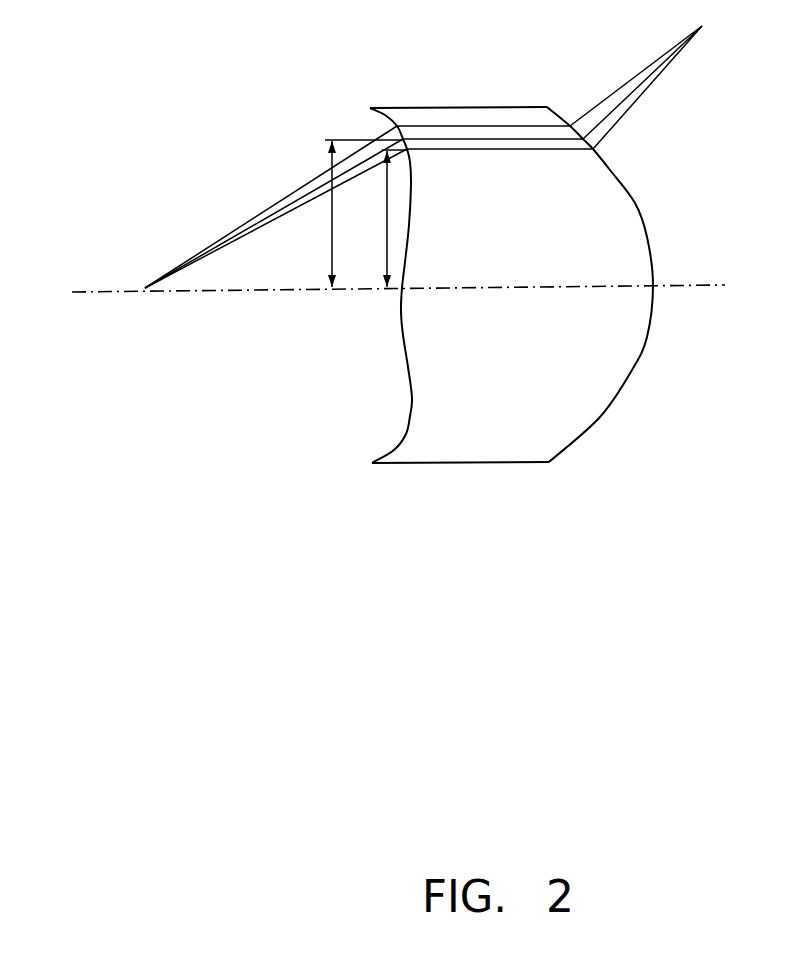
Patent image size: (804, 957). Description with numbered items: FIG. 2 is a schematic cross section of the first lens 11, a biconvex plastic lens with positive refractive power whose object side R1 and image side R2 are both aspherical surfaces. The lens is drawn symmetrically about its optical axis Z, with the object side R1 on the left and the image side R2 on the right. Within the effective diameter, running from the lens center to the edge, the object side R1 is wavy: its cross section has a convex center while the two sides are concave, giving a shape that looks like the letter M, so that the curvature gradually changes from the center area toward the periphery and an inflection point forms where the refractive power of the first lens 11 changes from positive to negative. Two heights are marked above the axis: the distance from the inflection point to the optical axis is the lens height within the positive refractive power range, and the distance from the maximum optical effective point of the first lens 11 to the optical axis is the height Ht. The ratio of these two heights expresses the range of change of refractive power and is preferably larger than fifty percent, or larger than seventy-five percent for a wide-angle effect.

The first lens 11 is at (486, 326).
The object side R1 is at (412, 412).
The image side R2 is at (598, 417).
The optical axis Z is at (386, 293).
The lens height of maximum optical effective point Ht is at (350, 213).